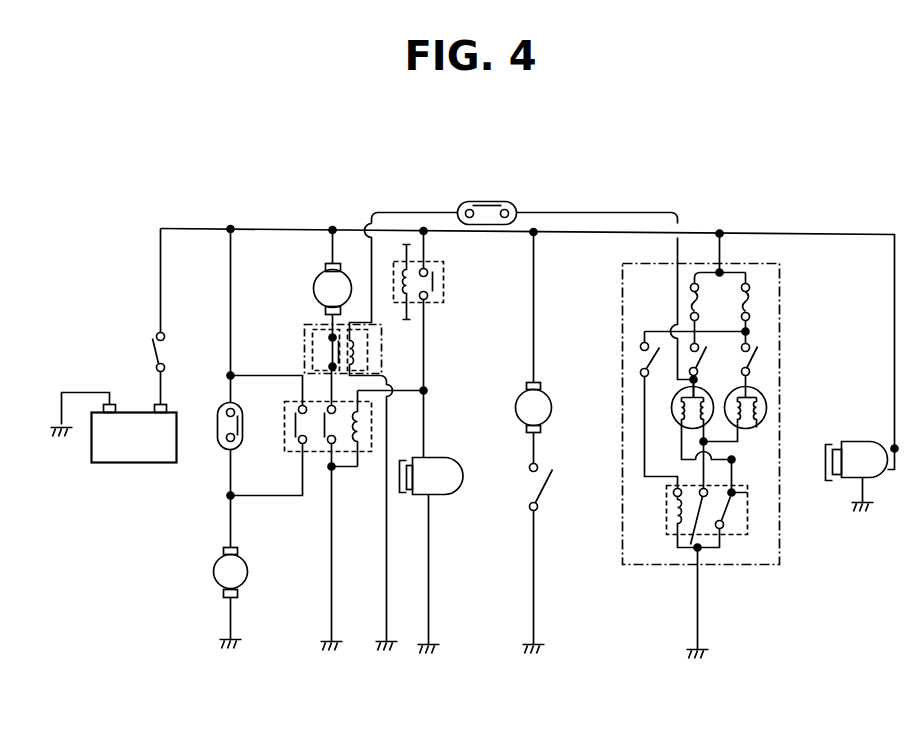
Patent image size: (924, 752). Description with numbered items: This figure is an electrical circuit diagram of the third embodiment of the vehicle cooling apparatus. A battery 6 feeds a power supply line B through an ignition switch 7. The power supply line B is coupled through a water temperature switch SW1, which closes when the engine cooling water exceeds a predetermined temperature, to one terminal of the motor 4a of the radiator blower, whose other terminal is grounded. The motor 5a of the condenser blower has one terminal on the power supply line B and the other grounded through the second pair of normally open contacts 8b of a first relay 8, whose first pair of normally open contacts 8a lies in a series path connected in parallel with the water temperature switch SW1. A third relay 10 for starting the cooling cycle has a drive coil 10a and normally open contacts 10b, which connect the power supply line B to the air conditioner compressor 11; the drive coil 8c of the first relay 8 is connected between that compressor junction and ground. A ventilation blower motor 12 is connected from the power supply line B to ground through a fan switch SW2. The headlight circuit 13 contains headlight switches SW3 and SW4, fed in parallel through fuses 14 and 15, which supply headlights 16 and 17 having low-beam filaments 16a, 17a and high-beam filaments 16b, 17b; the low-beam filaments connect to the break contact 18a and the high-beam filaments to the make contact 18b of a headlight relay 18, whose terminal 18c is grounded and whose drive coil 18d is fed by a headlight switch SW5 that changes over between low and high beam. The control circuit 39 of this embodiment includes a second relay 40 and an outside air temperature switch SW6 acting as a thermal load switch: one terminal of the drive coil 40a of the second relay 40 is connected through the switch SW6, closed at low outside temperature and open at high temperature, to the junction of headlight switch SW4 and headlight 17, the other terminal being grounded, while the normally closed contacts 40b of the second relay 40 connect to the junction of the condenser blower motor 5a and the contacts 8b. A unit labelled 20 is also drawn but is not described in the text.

The power supply line B is at (214, 226).
The ignition switch 7 is at (166, 354).
The battery 6 is at (157, 464).
The water temperature switch SW1 is at (218, 432).
The motor of radiator blower 4a is at (249, 571).
The motor of blower 5a is at (322, 278).
The second relay 40 is at (307, 358).
The drive coil of second relay 40a is at (353, 362).
The normally closed contacts of second relay 40b is at (330, 348).
The control circuit 39 is at (384, 346).
The third relay 10 is at (447, 300).
The drive coil of third relay 10a is at (409, 260).
The normally open contacts of third relay 10b is at (436, 284).
The first relay 8 is at (367, 456).
The first pair of normally open contacts of first relay 8a is at (294, 447).
The second pair of normally open contacts of first relay 8b is at (325, 447).
The drive coil of first relay 8c is at (360, 437).
The air conditioner system compressor 11 is at (440, 491).
The outside air temperature switch SW6 is at (516, 208).
The blower motor 12 is at (550, 420).
The fan switch SW2 is at (532, 487).
The headlight circuit 13 is at (780, 560).
The fuse 15 is at (694, 272).
The fuse 14 is at (749, 303).
The headlight switch SW4 is at (708, 346).
The headlight switch SW3 is at (759, 347).
The headlight switch SW5 is at (638, 338).
The headlight 17 is at (663, 395).
The low-beam filament 17a is at (688, 417).
The high-beam filament 17b is at (672, 410).
The headlight 16 is at (774, 388).
The low-beam filament 16a is at (767, 412).
The high-beam filament 16b is at (758, 428).
The headlight relay 18 is at (750, 532).
The break contact 18a is at (748, 493).
The make contact 18b is at (690, 548).
The terminal of headlight relay 18c is at (724, 512).
The drive coil of headlight relay 18d is at (676, 515).
The siren/alarm 20 is at (884, 483).